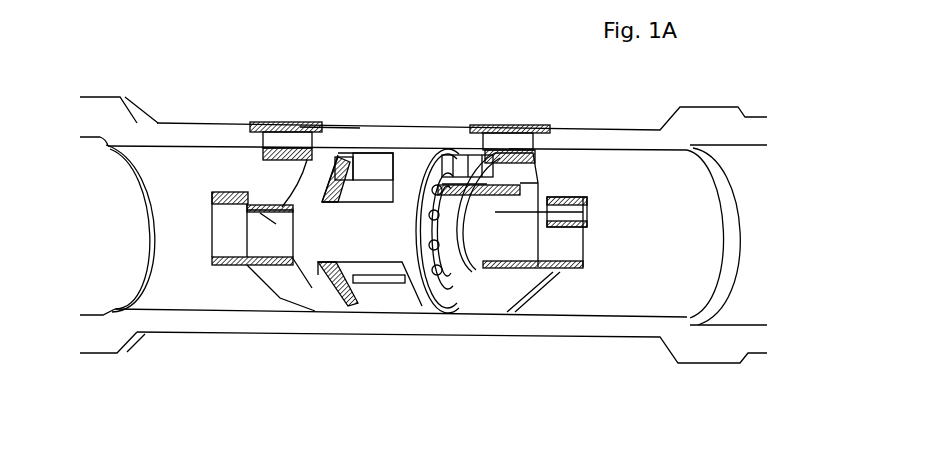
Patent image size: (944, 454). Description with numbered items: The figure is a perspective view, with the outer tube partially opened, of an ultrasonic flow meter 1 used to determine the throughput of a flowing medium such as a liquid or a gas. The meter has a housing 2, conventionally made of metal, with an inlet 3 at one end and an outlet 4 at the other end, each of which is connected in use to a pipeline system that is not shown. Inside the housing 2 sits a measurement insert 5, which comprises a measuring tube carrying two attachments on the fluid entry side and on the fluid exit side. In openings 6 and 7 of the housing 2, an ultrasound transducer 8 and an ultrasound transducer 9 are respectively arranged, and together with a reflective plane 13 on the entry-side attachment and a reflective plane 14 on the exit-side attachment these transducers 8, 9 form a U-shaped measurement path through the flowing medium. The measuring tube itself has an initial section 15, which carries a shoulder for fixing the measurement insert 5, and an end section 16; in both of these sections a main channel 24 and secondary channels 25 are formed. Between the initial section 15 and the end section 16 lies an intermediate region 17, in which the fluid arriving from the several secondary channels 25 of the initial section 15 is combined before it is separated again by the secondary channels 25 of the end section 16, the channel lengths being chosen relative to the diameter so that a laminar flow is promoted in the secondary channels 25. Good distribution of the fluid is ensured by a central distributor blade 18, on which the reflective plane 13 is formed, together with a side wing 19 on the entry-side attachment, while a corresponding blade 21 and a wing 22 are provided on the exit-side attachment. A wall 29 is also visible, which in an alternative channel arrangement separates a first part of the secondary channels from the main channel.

The flow meter 1 is at (371, 352).
The housing 2 is at (567, 318).
The inlet 3 is at (760, 252).
The outlet 4 is at (120, 188).
The measurement insert 5 is at (385, 220).
The opening 6 is at (323, 124).
The opening 7 is at (545, 146).
The ultrasound transducer 8 is at (282, 120).
The ultrasound transducer 9 is at (502, 128).
The reflective plane 13 is at (493, 250).
The reflective plane 14 is at (279, 214).
The initial section 15 is at (450, 157).
The end section 16 is at (340, 150).
The intermediate region 17 is at (404, 176).
The central distributor blade 18 is at (587, 197).
The side wing 19 is at (492, 205).
The blade 21 is at (232, 235).
The wing 22 is at (217, 195).
The main channel 24 is at (472, 272).
The secondary channels 25 is at (438, 313).
The wall 29 is at (360, 275).